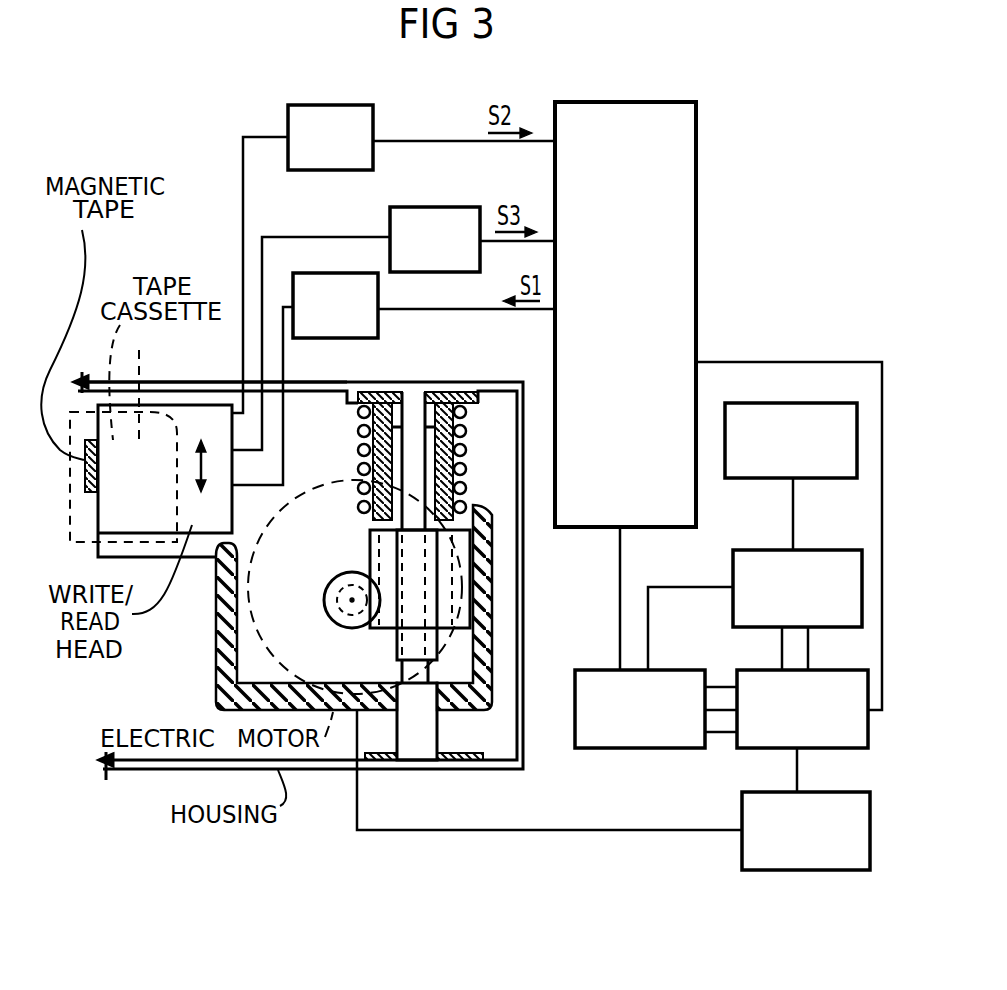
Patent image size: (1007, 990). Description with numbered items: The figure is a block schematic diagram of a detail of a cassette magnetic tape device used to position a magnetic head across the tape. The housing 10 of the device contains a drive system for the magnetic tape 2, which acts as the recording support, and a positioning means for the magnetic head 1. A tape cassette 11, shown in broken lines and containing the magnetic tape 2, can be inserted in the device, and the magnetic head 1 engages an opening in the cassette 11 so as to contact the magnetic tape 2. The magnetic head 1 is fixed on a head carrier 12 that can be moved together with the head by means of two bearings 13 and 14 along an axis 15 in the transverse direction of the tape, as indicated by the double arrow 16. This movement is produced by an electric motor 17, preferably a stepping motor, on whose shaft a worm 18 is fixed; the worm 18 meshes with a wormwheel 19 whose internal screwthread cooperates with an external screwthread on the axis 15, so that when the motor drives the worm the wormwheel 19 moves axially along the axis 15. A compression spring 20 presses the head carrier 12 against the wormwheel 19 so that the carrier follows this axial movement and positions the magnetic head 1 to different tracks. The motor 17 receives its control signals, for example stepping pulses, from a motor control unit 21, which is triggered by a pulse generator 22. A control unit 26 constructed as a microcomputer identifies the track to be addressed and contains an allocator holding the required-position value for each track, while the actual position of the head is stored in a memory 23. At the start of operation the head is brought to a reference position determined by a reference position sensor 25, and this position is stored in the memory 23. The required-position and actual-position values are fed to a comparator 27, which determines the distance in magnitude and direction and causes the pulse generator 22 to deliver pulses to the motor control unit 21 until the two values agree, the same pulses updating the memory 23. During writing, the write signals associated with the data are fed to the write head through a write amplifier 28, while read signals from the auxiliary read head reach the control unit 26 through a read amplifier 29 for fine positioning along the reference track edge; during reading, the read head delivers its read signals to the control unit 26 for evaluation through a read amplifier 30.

The magnetic head 1 is at (203, 525).
The magnetic tape 2 is at (83, 440).
The housing 10 is at (200, 340).
The tape cassette 11 is at (145, 340).
The head carrier 12 is at (219, 650).
The bearing 13 is at (440, 717).
The bearing 14 is at (447, 392).
The axis 15 is at (418, 395).
The double arrow 16 is at (202, 458).
The electric motor 17 is at (331, 487).
The worm 18 is at (330, 604).
The wormwheel 19 is at (370, 550).
The compression spring 20 is at (468, 456).
The motor control unit 21 is at (752, 852).
The pulse generator 22 is at (753, 672).
The memory 23 is at (737, 575).
The reference position sensor 25 is at (765, 478).
The control unit 26 is at (672, 306).
The comparator 27 is at (597, 672).
The write amplifier 28 is at (355, 338).
The read amplifier 29 is at (288, 126).
The read amplifier 30 is at (390, 228).